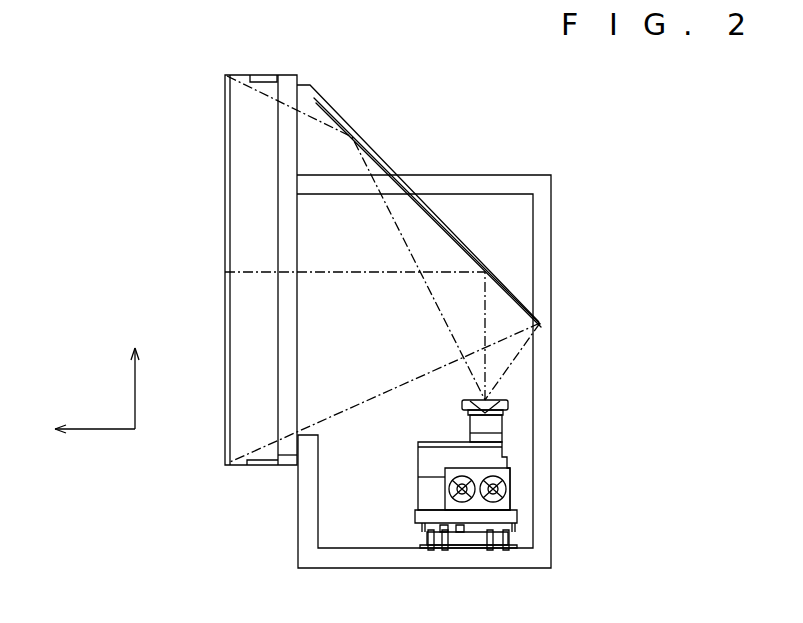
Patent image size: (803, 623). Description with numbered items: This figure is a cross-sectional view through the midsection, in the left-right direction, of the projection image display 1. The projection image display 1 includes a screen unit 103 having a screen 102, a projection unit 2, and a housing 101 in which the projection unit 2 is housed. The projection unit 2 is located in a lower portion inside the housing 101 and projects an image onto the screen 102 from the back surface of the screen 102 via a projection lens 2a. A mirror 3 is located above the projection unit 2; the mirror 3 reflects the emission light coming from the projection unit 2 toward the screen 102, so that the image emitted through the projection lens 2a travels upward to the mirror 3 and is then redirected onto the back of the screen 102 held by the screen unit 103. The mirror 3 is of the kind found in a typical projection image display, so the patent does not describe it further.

The projection image display 1 is at (98, 40).
The projection unit 2 is at (509, 457).
The projection lens 2a is at (508, 403).
The mirror 3 is at (432, 212).
The housing 101 is at (522, 175).
The screen 102 is at (225, 188).
The screen unit 103 is at (246, 102).